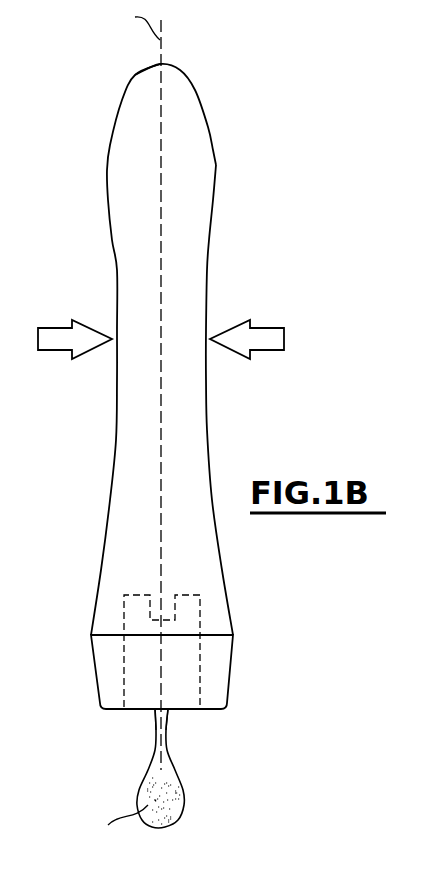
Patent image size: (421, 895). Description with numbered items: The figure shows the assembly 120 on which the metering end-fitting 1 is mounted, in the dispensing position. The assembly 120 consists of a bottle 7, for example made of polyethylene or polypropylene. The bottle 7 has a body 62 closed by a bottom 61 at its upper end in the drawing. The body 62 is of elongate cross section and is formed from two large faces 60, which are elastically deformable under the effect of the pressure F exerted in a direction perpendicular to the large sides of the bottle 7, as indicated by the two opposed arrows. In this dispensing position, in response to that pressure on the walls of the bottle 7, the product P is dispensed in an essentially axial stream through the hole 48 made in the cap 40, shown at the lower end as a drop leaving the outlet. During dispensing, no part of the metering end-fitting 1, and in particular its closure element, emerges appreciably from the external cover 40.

The metering end-fitting 1 is at (115, 652).
The bottle 7 is at (218, 425).
The cap 40 is at (232, 672).
The hole 48 is at (170, 712).
The large faces 60 is at (208, 238).
The bottom 61 is at (192, 90).
The body 62 is at (104, 206).
The assembly 120 is at (64, 438).